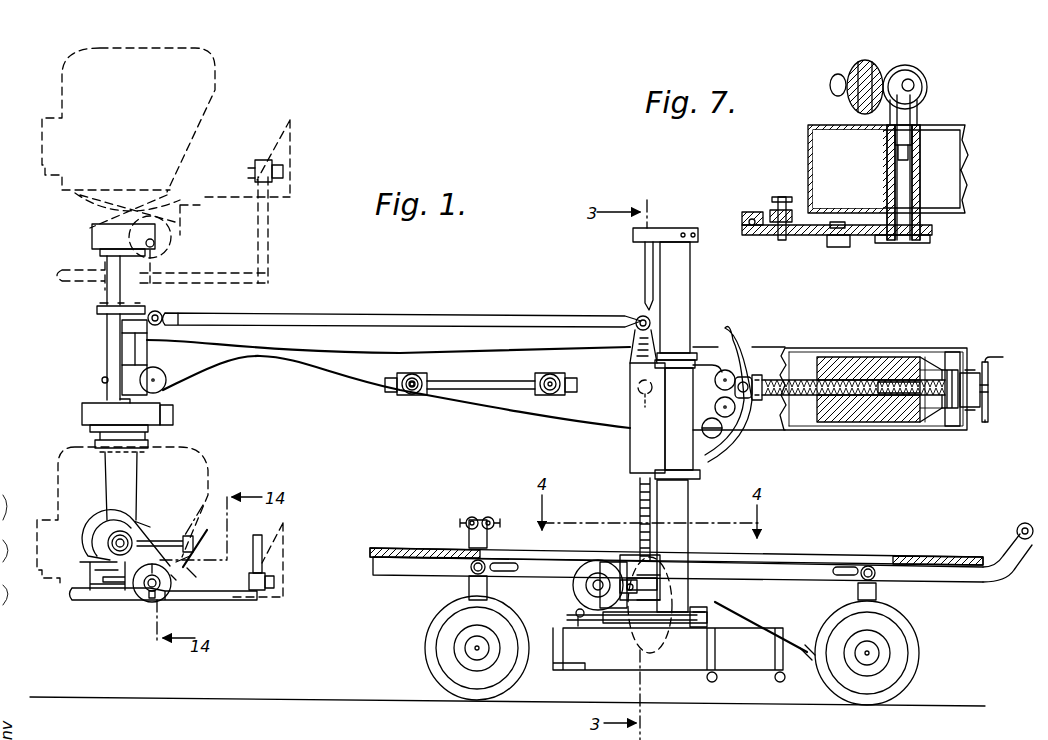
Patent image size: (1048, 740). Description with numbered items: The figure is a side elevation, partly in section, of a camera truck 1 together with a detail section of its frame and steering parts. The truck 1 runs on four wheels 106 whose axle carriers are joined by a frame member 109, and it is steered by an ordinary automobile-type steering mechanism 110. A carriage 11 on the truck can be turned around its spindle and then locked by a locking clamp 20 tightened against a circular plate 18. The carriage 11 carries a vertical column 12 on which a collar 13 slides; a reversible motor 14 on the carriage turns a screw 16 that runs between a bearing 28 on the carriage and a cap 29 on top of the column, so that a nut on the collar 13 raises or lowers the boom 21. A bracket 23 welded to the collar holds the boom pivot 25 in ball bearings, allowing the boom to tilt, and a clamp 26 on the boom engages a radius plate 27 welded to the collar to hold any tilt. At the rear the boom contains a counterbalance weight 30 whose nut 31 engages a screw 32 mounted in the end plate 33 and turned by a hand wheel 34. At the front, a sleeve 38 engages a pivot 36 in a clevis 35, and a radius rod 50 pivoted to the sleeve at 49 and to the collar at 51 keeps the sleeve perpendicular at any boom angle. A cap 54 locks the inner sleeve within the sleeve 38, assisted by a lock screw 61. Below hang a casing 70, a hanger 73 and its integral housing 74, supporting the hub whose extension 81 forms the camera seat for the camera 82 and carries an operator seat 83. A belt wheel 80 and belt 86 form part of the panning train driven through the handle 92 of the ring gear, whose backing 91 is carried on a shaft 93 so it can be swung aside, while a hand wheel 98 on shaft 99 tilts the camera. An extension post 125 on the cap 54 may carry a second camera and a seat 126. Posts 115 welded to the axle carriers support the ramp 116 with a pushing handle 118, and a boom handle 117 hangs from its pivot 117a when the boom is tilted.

In FIG. 1, the truck 1 is at (543, 673).
In FIG. 1, the carriage 11 is at (618, 554).
In FIG. 1, the column 12 is at (682, 510).
In FIG. 1, the collar 13 is at (680, 450).
In FIG. 1, the reversible motor 14 is at (574, 588).
In FIG. 1, the screw 16 is at (638, 505).
In FIG. 1, the circular plate 18 is at (580, 621).
In FIG. 1, the locking clamp 20 is at (752, 621).
In FIG. 1, the boom 21 is at (335, 372).
In FIG. 1, the bracket 23 is at (631, 453).
In FIG. 1, the boom pivot 25 is at (646, 406).
In FIG. 1, the clamp 26 is at (743, 380).
In FIG. 1, the radius plate 27 is at (735, 440).
In FIG. 1, the bearing 28 is at (653, 588).
In FIG. 1, the cap 29 is at (688, 225).
In FIG. 1, the weight 30 is at (830, 422).
In FIG. 1, the nut 31 is at (940, 410).
In FIG. 1, the screw 32 is at (798, 380).
In FIG. 1, the end plate 33 is at (966, 424).
In FIG. 1, the hand wheel 34 is at (990, 382).
In FIG. 1, the clevis 35 is at (150, 350).
In FIG. 1, the pivot 36 is at (163, 385).
In FIG. 1, the sleeve 38 is at (107, 343).
In FIG. 1, the pivotal connection 49 is at (161, 314).
In FIG. 1, the radius rod 50 is at (447, 315).
In FIG. 1, the pivotal connection 51 is at (639, 317).
In FIG. 1, the cap 54 is at (97, 311).
In FIG. 1, the lock screw 61 is at (102, 381).
In FIG. 1, the casing 70 is at (82, 413).
In FIG. 1, the hanger 73 is at (107, 480).
In FIG. 1, the housing 74 is at (138, 518).
In FIG. 1, the belt wheel 80 is at (108, 541).
In FIG. 1, the extension 81 is at (100, 600).
In FIG. 1, the camera 82 is at (205, 455).
In FIG. 1, the seat 83 is at (283, 598).
In FIG. 1, the belt 86 is at (99, 561).
In FIG. 1, the backing 91 is at (172, 590).
In FIG. 1, the handle 92 is at (154, 598).
In FIG. 1, the shaft 93 is at (143, 590).
In FIG. 1, the hand wheel 98 is at (199, 553).
In FIG. 1, the shaft 99 is at (160, 537).
In FIG. 1, the wheels 106 is at (424, 645).
In FIG. 1, the frame member 109 is at (685, 667).
In FIG. 7, the frame member 109 is at (950, 125).
In FIG. 1, the steering mechanism 110 is at (531, 606).
In FIG. 7, the steering mechanism 110 is at (927, 83).
In FIG. 1, the post 115 is at (469, 583).
In FIG. 1, the ramp 116 is at (947, 558).
In FIG. 1, the handle 117 is at (467, 390).
In FIG. 1, the pivot 117a is at (412, 388).
In FIG. 1, the handle 118 is at (1021, 524).
In FIG. 1, the extension post 125 is at (103, 259).
In FIG. 1, the seat 126 is at (278, 202).